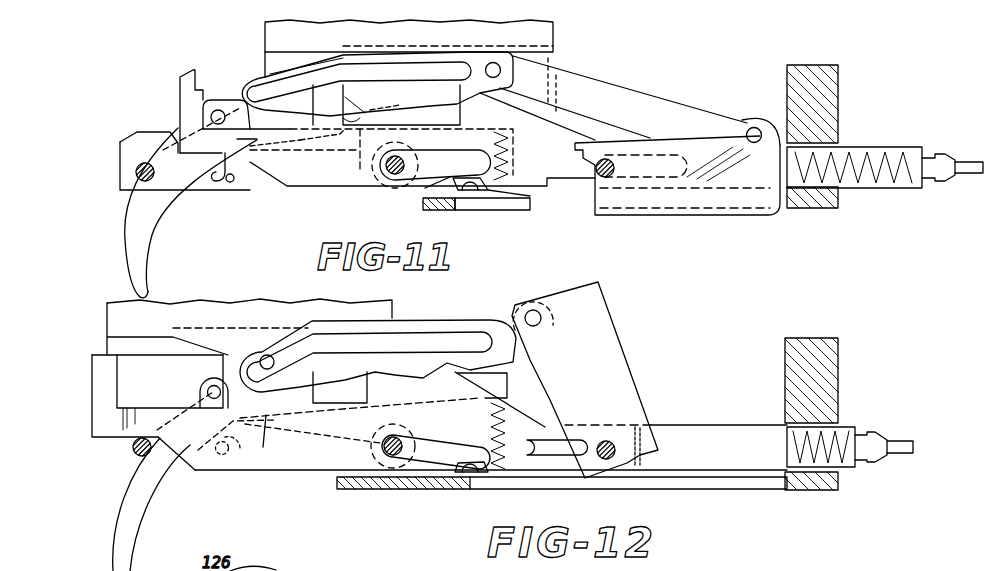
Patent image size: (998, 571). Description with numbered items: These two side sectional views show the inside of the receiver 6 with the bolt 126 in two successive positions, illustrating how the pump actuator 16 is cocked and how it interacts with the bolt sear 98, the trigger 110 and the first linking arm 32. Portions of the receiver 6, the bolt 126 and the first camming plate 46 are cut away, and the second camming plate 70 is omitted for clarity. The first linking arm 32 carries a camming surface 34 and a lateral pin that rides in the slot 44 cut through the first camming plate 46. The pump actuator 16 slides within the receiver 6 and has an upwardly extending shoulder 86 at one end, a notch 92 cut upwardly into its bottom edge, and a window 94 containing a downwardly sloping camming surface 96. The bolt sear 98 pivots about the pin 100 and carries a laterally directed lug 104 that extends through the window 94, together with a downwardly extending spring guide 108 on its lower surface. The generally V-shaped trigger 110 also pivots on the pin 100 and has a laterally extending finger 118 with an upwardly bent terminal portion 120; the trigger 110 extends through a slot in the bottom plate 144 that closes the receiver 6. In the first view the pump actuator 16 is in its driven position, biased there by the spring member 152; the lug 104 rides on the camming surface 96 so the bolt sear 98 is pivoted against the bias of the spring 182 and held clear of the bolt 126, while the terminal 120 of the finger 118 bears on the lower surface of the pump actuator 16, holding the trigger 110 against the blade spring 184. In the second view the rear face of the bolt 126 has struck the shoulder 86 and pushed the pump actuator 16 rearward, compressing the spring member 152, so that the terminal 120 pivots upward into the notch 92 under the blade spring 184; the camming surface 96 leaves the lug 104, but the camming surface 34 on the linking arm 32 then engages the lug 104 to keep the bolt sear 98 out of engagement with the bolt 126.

In FIG. 11, the receiver 6 is at (817, 70).
In FIG. 12, the receiver 6 is at (820, 342).
In FIG. 12, the pump actuator 16 is at (707, 432).
In FIG. 11, the first linking arm 32 is at (620, 109).
In FIG. 12, the first linking arm 32 is at (455, 315).
In FIG. 12, the camming surface 34 is at (283, 400).
In FIG. 11, the slot 44 is at (441, 63).
In FIG. 11, the first camming plate 46 is at (273, 65).
In FIG. 11, the second camming plate 70 is at (125, 161).
In FIG. 12, the upwardly extending shoulder 86 is at (114, 360).
In FIG. 12, the notch 92 is at (487, 458).
In FIG. 11, the window 94 is at (438, 160).
In FIG. 12, the window 94 is at (243, 448).
In FIG. 11, the camming surface 96 is at (388, 116).
In FIG. 12, the camming surface 96 is at (373, 405).
In FIG. 11, the bolt sear 98 is at (245, 140).
In FIG. 11, the pin 100 is at (213, 110).
In FIG. 12, the pin 100 is at (211, 388).
In FIG. 11, the laterally directed lug 104 is at (345, 129).
In FIG. 12, the laterally directed lug 104 is at (403, 403).
In FIG. 11, the spring guide 108 is at (510, 152).
In FIG. 12, the spring guide 108 is at (508, 418).
In FIG. 11, the trigger member 110 is at (153, 214).
In FIG. 12, the trigger member 110 is at (140, 497).
In FIG. 11, the laterally extending finger 118 is at (468, 207).
In FIG. 12, the laterally extending finger 118 is at (473, 483).
In FIG. 11, the upwardly bent terminal portion 120 is at (433, 212).
In FIG. 12, the upwardly bent terminal portion 120 is at (457, 480).
In FIG. 11, the bolt 126 is at (275, 33).
In FIG. 12, the bolt 126 is at (260, 315).
In FIG. 11, the bottom plate 144 is at (513, 212).
In FIG. 11, the spring member 152 is at (882, 190).
In FIG. 12, the spring member 152 is at (828, 492).
In FIG. 11, the spring 182 is at (520, 192).
In FIG. 11, the blade spring 184 is at (277, 188).
In FIG. 12, the blade spring 184 is at (238, 470).